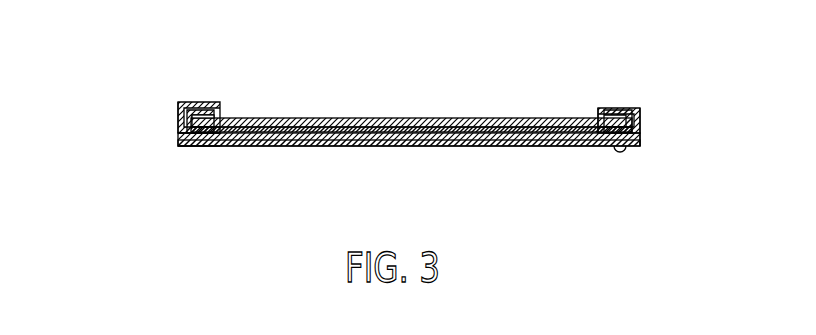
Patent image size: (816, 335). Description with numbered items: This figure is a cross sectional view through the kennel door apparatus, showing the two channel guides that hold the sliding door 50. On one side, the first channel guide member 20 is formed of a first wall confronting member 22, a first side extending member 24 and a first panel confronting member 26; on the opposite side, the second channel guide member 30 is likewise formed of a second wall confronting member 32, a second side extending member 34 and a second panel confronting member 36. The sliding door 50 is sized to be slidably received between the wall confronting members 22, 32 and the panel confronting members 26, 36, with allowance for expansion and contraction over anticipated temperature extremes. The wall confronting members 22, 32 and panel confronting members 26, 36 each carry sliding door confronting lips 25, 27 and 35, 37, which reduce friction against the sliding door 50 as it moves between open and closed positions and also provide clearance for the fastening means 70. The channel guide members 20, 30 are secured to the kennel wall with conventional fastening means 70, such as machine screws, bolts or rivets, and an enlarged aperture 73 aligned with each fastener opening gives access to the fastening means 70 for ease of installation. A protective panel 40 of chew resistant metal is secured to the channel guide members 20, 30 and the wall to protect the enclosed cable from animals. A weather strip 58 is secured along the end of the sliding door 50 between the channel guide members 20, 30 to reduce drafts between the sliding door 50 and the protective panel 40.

The first channel guide member 20 is at (189, 113).
The first wall confronting member 22 is at (197, 104).
The first side extending member 24 is at (178, 117).
The sliding door confronting lip 25 is at (223, 110).
The first panel confronting member 26 is at (184, 153).
The sliding door confronting lip 27 is at (293, 150).
The second channel guide member 30 is at (652, 105).
The second wall confronting member 32 is at (633, 110).
The second side extending member 34 is at (646, 119).
The sliding door confronting lip 35 is at (603, 112).
The second panel confronting member 36 is at (621, 149).
The sliding door confronting lip 37 is at (584, 147).
The protective panel 40 is at (409, 143).
The sliding door 50 is at (404, 118).
The weather strip 58 is at (490, 118).
The fastening means 70 is at (197, 146).
The enlarged aperture 73 is at (122, 16).